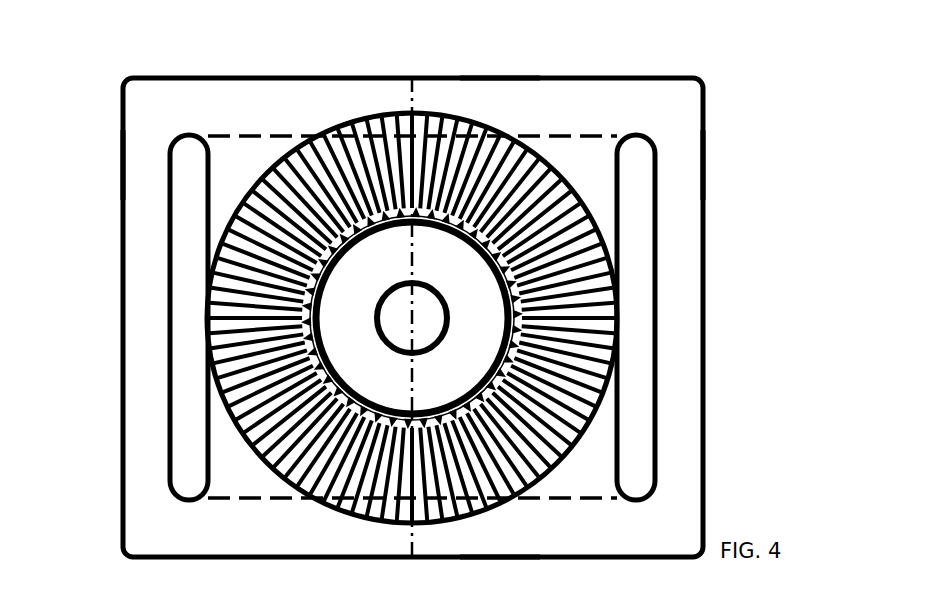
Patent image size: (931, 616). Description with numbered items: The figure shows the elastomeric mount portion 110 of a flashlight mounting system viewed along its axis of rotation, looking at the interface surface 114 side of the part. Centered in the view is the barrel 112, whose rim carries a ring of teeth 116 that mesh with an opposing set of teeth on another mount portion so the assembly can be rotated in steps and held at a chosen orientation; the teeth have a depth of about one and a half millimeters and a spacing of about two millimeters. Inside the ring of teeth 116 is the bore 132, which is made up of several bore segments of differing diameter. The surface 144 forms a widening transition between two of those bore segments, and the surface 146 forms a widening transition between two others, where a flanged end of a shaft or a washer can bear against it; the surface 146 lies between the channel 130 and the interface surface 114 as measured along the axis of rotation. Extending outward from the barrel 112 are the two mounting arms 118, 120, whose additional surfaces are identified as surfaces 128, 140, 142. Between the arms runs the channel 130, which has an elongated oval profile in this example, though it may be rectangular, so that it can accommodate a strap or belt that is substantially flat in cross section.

The elastomeric mount portion 110 is at (716, 64).
The barrel 112 is at (376, 524).
The interface surface 114 is at (371, 123).
The teeth 116 is at (459, 121).
The mounting arm 118 is at (143, 160).
The mounting arm 120 is at (685, 160).
The surface of mounting arms 128 is at (201, 120).
The channel 130 is at (640, 245).
The bore 132 is at (429, 331).
The surface of mounting arms 140 is at (497, 66).
The surface of mounting arms 142 is at (497, 567).
The surface 144 is at (496, 331).
The surface 146 is at (438, 611).